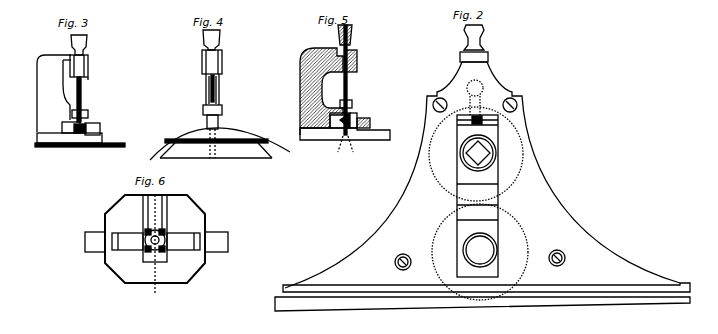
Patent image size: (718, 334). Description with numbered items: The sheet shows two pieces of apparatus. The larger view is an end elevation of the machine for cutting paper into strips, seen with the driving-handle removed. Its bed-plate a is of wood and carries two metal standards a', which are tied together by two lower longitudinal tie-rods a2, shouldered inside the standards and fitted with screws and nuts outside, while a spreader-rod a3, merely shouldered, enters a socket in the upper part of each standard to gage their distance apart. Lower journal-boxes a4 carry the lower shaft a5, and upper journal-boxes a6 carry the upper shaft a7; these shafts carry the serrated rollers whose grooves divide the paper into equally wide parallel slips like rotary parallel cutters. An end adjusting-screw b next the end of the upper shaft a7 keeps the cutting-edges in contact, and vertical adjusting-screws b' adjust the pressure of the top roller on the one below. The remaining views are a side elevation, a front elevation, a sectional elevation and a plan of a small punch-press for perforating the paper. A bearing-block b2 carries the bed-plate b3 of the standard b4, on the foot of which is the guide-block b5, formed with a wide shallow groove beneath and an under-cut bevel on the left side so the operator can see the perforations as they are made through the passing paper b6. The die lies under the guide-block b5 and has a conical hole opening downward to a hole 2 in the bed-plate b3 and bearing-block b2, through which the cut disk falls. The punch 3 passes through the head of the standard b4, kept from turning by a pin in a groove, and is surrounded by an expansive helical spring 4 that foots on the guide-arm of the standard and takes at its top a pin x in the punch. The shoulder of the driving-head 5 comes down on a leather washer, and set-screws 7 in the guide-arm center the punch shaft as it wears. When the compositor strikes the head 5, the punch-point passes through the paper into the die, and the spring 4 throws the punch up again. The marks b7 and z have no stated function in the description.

In FIG. 2, the hole 2 is at (474, 37).
In FIG. 2, the bed-plate a is at (482, 291).
In FIG. 2, the metal standards a' is at (482, 175).
In FIG. 2, the lower longitudinal tie-rods a2 is at (453, 189).
In FIG. 2, the spreader-rod a3 is at (565, 260).
In FIG. 2, the lower journal-boxes a4 is at (478, 196).
In FIG. 2, the lower shaft a5 is at (479, 219).
In FIG. 2, the upper journal-boxes a6 is at (475, 97).
In FIG. 2, the upper shaft a7 is at (478, 201).
In FIG. 4, the end adjusting-screw b is at (217, 144).
In FIG. 6, the end adjusting-screw b is at (155, 248).
In FIG. 3, the vertical adjusting-screws b' is at (54, 93).
In FIG. 5, the vertical adjusting-screws b' is at (318, 91).
In FIG. 6, the vertical adjusting-screws b' is at (155, 245).
In FIG. 2, the bearing-block b2 is at (474, 57).
In FIG. 3, the bed-plate b3 is at (80, 145).
In FIG. 5, the bed-plate b3 is at (345, 133).
In FIG. 6, the bed-plate b3 is at (155, 239).
In FIG. 4, the standard b4 is at (223, 90).
In FIG. 3, the guide-block b5 is at (100, 128).
In FIG. 4, the guide-block b5 is at (219, 124).
In FIG. 5, the guide-block b5 is at (352, 118).
In FIG. 6, the guide-block b5 is at (155, 228).
In FIG. 4, the paper b6 is at (220, 142).
In FIG. 6, the paper b6 is at (197, 242).
In FIG. 6, the side tab b7 is at (95, 242).
In FIG. 3, the punch 3 is at (70, 56).
In FIG. 4, the punch 3 is at (222, 50).
In FIG. 5, the punch 3 is at (357, 60).
In FIG. 3, the expansive helical spring 4 is at (76, 99).
In FIG. 4, the expansive helical spring 4 is at (209, 87).
In FIG. 5, the expansive helical spring 4 is at (348, 95).
In FIG. 3, the driving-head 5 is at (88, 42).
In FIG. 4, the driving-head 5 is at (221, 35).
In FIG. 5, the driving-head 5 is at (348, 32).
In FIG. 3, the set-screws 7 is at (72, 114).
In FIG. 4, the set-screws 7 is at (204, 108).
In FIG. 5, the set-screws 7 is at (352, 104).
In FIG. 6, the set-screws 7 is at (145, 235).
In FIG. 3, the pin x is at (92, 80).
In FIG. 4, the pin x is at (205, 78).
In FIG. 5, the pin x is at (357, 72).
In FIG. 4, the mark z is at (213, 143).
In FIG. 5, the mark z is at (345, 144).